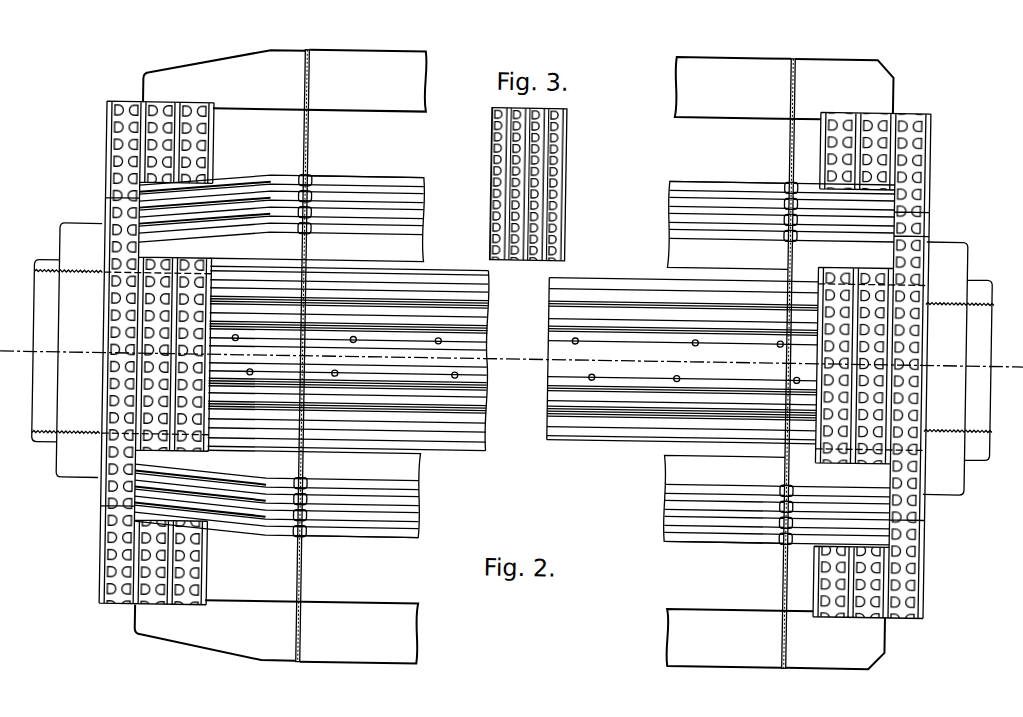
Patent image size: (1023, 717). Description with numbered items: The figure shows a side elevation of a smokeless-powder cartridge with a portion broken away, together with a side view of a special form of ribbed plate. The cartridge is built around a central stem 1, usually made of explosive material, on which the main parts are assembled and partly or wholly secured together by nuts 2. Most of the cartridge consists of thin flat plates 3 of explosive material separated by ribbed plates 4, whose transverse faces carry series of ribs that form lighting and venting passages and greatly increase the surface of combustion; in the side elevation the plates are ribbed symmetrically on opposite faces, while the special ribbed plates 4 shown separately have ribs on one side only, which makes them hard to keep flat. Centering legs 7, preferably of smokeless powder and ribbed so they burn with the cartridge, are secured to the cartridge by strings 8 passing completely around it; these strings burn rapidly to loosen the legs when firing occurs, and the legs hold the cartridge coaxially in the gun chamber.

In FIG. 2, the central stem 1 is at (438, 451).
In FIG. 2, the nuts 2 is at (72, 486).
In FIG. 2, the thin flat plates 3 is at (101, 604).
In FIG. 2, the ribbed plates 4 is at (121, 611).
In FIG. 3, the ribbed plates 4 is at (563, 199).
In FIG. 2, the centering legs 7 is at (349, 54).
In FIG. 2, the strings 8 is at (306, 124).